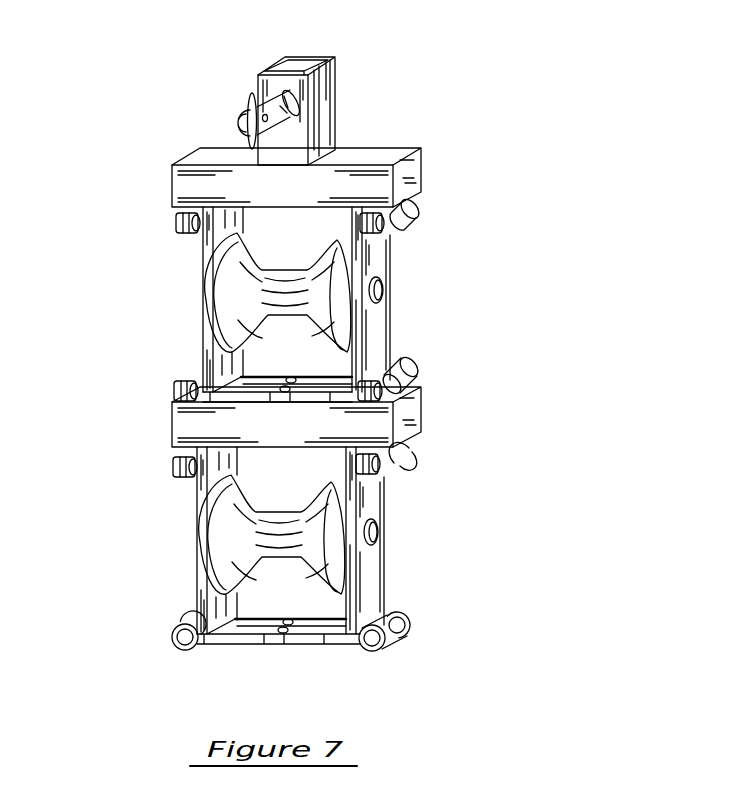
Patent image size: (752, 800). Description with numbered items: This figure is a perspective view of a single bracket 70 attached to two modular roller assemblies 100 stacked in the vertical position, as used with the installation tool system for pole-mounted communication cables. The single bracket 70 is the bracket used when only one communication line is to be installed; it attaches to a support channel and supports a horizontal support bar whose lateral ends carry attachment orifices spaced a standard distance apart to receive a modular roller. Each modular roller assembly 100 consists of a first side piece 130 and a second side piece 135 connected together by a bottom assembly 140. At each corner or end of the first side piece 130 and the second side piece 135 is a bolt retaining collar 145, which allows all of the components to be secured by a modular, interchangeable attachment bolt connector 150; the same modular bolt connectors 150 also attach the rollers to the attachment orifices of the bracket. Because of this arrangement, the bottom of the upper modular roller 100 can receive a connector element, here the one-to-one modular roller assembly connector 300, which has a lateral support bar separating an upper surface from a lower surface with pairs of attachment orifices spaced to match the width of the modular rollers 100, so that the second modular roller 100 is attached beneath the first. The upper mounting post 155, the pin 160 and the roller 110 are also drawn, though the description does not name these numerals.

The single bracket 70 is at (319, 126).
The modular roller assembly 100 is at (309, 413).
The roller 110 is at (318, 307).
The first side piece 130 is at (202, 260).
The second side piece 135 is at (378, 267).
The bottom assembly 140 is at (302, 393).
The bolt retaining collar 145 is at (188, 235).
The modular bolt connector 150 is at (178, 215).
The mounting post 155 is at (277, 76).
The pin 160 is at (240, 118).
The 1:1 modular roller assembly connector 300 is at (202, 427).